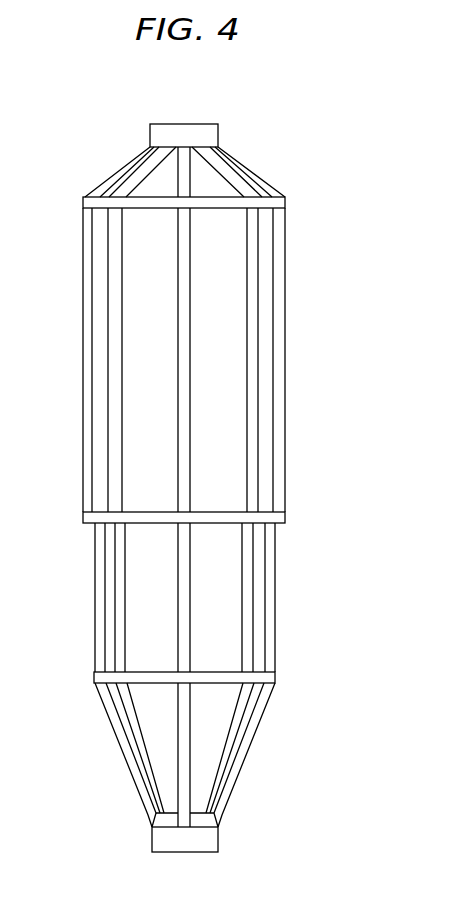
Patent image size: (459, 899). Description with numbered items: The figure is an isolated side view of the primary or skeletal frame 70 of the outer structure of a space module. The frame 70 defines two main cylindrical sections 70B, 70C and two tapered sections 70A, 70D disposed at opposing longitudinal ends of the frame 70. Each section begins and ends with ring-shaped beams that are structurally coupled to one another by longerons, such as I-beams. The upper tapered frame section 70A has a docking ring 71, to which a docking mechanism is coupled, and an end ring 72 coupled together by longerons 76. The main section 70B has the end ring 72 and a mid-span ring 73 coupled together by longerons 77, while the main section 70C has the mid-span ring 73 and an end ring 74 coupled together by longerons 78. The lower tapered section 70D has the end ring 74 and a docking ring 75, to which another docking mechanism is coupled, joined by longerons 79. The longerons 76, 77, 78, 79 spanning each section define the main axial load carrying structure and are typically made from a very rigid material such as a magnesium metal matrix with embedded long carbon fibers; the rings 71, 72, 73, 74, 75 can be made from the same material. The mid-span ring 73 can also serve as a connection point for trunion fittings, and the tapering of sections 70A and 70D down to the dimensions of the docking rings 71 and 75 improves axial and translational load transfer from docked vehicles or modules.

The frame 70 is at (290, 122).
The upper tapered frame section 70A is at (317, 135).
The main section 70B is at (317, 208).
The main section 70C is at (317, 527).
The lower tapered section 70D is at (317, 680).
The docking ring 71 is at (201, 135).
The end ring 72 is at (104, 204).
The mid-span ring 73 is at (83, 516).
The end ring 74 is at (94, 678).
The docking ring 75 is at (200, 840).
The longerons 76 is at (180, 158).
The longerons 77 is at (177, 320).
The longerons 78 is at (178, 602).
The longerons 79 is at (178, 737).